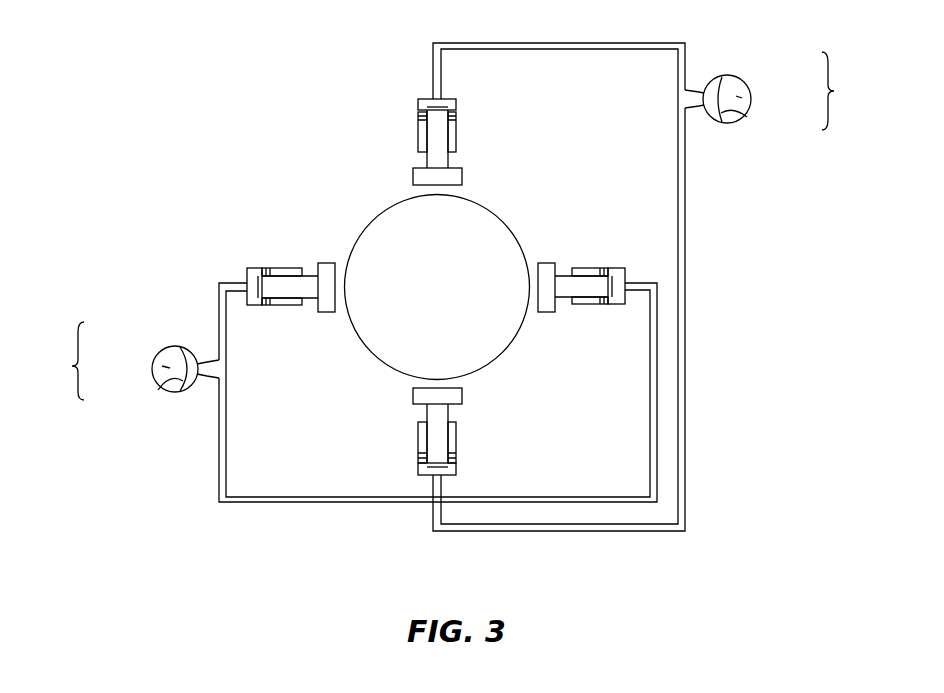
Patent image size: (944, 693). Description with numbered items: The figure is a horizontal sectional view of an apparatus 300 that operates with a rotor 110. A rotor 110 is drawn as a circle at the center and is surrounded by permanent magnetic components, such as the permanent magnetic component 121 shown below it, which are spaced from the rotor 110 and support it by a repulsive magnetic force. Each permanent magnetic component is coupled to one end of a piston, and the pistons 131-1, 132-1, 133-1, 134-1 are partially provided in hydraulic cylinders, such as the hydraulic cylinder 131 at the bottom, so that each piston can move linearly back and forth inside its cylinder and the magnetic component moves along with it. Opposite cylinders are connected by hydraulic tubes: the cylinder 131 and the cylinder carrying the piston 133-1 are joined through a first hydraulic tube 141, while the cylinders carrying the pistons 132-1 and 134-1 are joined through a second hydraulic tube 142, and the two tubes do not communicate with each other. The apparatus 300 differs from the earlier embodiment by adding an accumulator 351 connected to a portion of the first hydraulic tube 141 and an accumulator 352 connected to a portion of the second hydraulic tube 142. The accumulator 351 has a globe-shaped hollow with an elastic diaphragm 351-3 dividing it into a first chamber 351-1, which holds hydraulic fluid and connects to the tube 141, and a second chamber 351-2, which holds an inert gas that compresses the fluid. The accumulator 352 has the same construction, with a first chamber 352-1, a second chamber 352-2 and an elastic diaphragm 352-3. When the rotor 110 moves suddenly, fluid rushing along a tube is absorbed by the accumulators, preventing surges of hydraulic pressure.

The apparatus 300 is at (243, 54).
The rotor 110 is at (503, 221).
The permanent magnetic component 121 is at (413, 396).
The hydraulic cylinder 131 is at (435, 436).
The piston 131-1 is at (443, 466).
The piston 132-1 is at (615, 282).
The piston 133-1 is at (430, 107).
The piston 134-1 is at (258, 292).
The first hydraulic tube 141 is at (541, 532).
The second hydraulic tube 142 is at (219, 479).
The accumulator 351 is at (776, 92).
The first chamber 351-1 is at (712, 87).
The second chamber 351-2 is at (742, 98).
The elastic diaphragm 351-3 is at (740, 118).
The accumulator 352 is at (130, 360).
The first chamber 352-1 is at (197, 352).
The second chamber 352-2 is at (165, 366).
The elastic diaphragm 352-3 is at (160, 390).